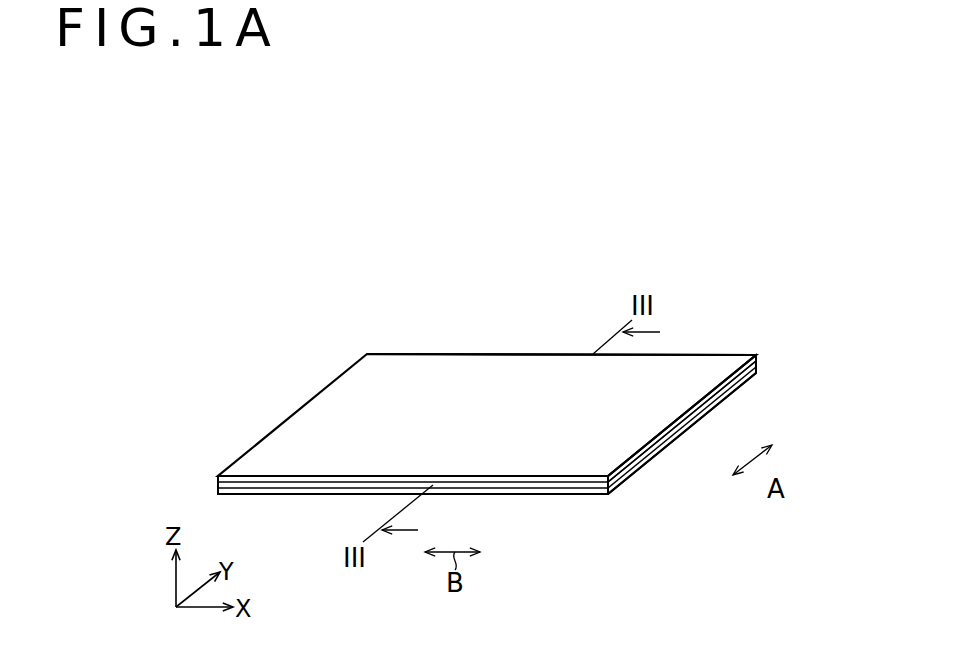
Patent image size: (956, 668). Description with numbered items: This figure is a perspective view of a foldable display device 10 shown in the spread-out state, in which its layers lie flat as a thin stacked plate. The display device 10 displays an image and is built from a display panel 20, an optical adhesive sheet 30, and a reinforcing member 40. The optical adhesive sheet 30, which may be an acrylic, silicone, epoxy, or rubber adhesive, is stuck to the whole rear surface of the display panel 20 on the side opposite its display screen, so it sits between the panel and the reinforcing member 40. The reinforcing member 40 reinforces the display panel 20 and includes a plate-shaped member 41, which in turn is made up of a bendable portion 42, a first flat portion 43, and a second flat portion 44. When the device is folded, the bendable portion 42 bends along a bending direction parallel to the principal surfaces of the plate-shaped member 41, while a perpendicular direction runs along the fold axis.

The display device 10 is at (363, 327).
The display panel 20 is at (507, 375).
The optical adhesive sheet 30 is at (522, 485).
The reinforcing member 40 is at (608, 502).
The plate-shaped member 41 is at (567, 497).
The bendable portion 42 is at (692, 430).
The first flat portion 43 is at (647, 470).
The second flat portion 44 is at (737, 390).